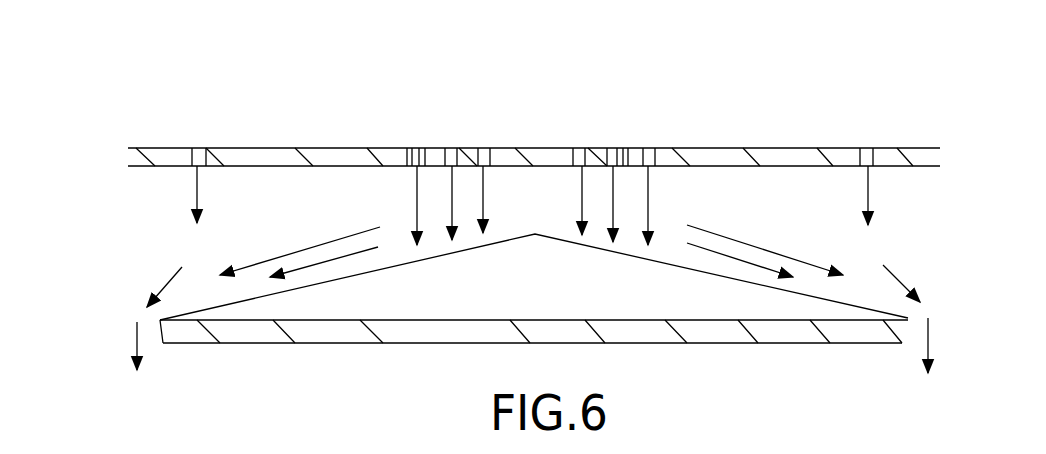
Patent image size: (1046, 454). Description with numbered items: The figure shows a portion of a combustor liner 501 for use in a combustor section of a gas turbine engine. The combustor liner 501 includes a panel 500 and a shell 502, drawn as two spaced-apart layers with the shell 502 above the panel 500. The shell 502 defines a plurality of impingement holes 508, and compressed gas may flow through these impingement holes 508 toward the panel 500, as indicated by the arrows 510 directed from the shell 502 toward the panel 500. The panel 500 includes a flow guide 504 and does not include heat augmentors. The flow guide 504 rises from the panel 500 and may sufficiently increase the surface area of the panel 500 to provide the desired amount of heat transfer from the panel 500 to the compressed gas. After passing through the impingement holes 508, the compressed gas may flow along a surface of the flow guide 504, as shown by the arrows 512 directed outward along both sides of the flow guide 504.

The combustor liner 501 is at (492, 108).
The shell 502 is at (170, 147).
The impingement holes 508 is at (417, 147).
The arrows 510 is at (487, 181).
The arrows 512 is at (357, 232).
The flow guide 504 is at (519, 294).
The panel 500 is at (190, 323).